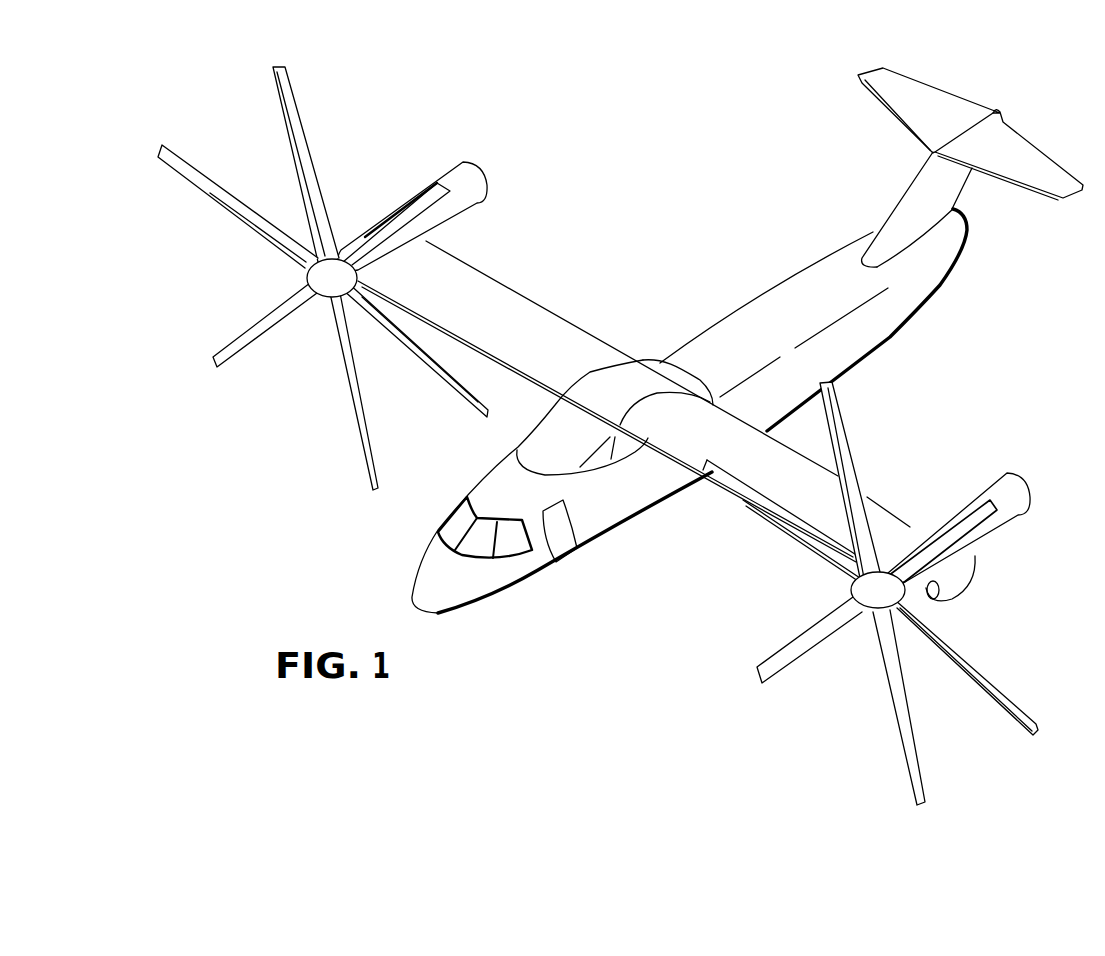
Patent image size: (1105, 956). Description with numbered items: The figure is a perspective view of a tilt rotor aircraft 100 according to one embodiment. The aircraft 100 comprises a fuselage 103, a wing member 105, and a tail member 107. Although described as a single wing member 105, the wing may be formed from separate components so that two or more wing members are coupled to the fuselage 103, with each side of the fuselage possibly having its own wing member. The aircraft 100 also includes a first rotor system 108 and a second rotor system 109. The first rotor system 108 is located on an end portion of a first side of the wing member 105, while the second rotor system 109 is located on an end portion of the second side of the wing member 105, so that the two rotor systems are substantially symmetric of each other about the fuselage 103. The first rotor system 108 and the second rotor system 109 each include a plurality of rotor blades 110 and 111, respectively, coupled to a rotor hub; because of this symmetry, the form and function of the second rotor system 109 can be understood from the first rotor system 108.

The tilt rotor aircraft 100 is at (601, 436).
The fuselage 103 is at (513, 590).
The wing member 105 is at (533, 300).
The tail member 107 is at (893, 207).
The first rotor system 108 is at (852, 593).
The second rotor system 109 is at (304, 278).
The rotor blades 110 is at (790, 637).
The rotor blades 111 is at (243, 327).